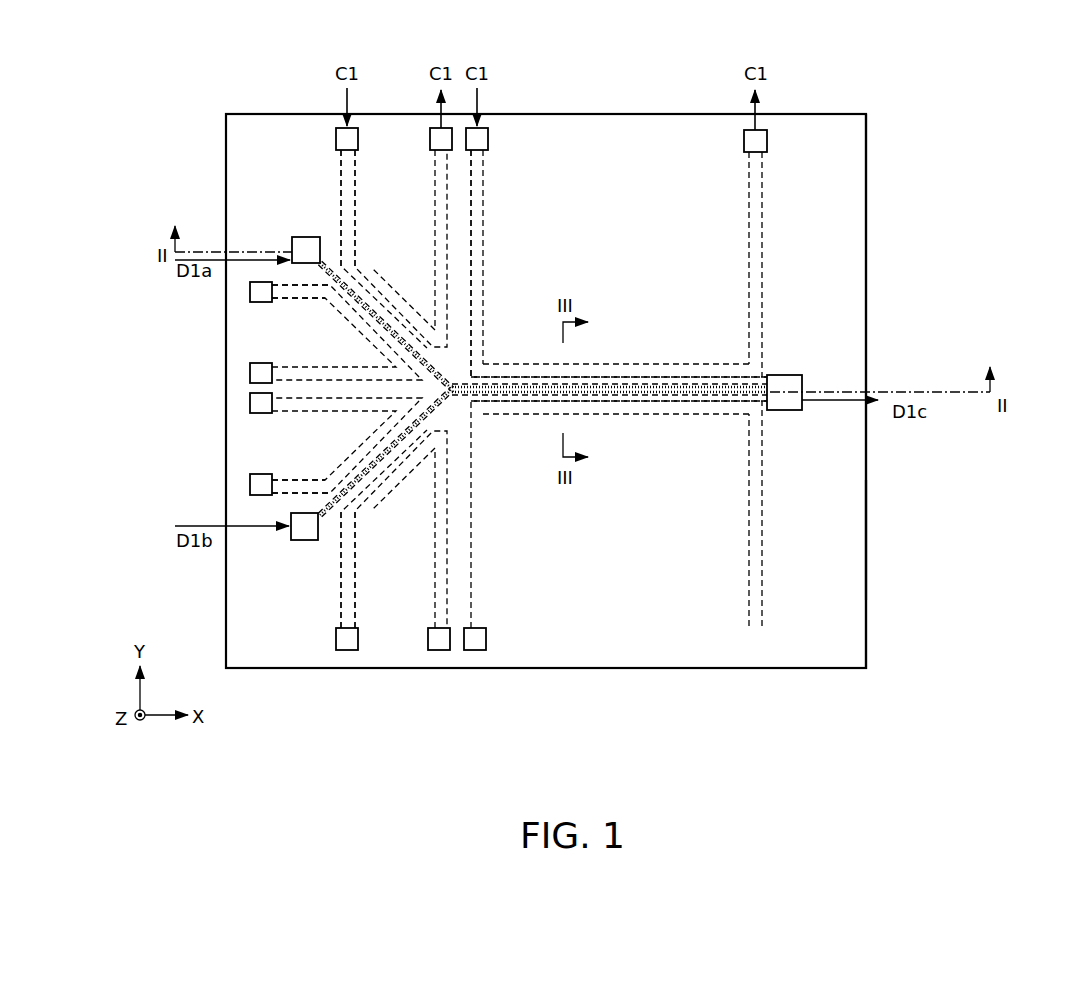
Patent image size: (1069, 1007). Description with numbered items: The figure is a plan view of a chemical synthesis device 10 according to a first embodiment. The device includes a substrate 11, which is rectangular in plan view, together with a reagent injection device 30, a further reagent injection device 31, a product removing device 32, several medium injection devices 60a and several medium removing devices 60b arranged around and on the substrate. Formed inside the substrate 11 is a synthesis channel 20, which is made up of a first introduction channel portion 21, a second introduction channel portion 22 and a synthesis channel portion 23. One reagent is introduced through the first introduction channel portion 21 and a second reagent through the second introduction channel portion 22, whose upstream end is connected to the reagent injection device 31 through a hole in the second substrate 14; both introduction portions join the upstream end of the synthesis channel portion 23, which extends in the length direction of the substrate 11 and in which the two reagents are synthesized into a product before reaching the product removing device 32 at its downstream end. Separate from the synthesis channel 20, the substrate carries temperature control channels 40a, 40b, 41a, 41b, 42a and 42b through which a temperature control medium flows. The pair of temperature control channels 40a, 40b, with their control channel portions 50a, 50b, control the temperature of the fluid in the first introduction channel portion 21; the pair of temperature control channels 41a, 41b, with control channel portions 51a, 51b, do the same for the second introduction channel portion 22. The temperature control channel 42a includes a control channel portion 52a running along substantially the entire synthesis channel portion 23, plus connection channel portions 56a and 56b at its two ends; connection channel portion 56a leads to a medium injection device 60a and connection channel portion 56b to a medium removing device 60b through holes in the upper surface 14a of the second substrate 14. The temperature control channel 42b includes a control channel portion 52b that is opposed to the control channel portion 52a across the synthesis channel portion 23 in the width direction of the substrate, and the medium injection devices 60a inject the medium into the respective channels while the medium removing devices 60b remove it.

The chemical synthesis device 10 is at (981, 129).
The substrate 11 is at (853, 110).
The second substrate 14 is at (850, 637).
The upper surface of the second substrate 14a is at (824, 542).
The synthesis channel 20 is at (680, 400).
The first introduction channel portion 21 is at (333, 255).
The second introduction channel portion 22 is at (332, 518).
The synthesis channel portion 23 is at (604, 380).
The reagent injection device 30 is at (300, 242).
The reagent injection device 31 is at (302, 538).
The product removing device 32 is at (795, 383).
The temperature control channel 40a is at (333, 174).
The temperature control channel 40b is at (287, 308).
The temperature control channel 41a is at (338, 604).
The temperature control channel 41b is at (290, 475).
The temperature control channel 42a is at (491, 172).
The temperature control channel 42b is at (490, 606).
The control channel portion 50a is at (392, 282).
The control channel portion 50b is at (360, 322).
The control channel portion 51a is at (387, 492).
The control channel portion 51b is at (355, 432).
The control channel portion 52a is at (686, 364).
The control channel portion 52b is at (607, 406).
The connection channel portion 56a is at (485, 225).
The connection channel portion 56b is at (748, 228).
The medium injection device 60a is at (347, 140).
The medium removing device 60b is at (441, 140).